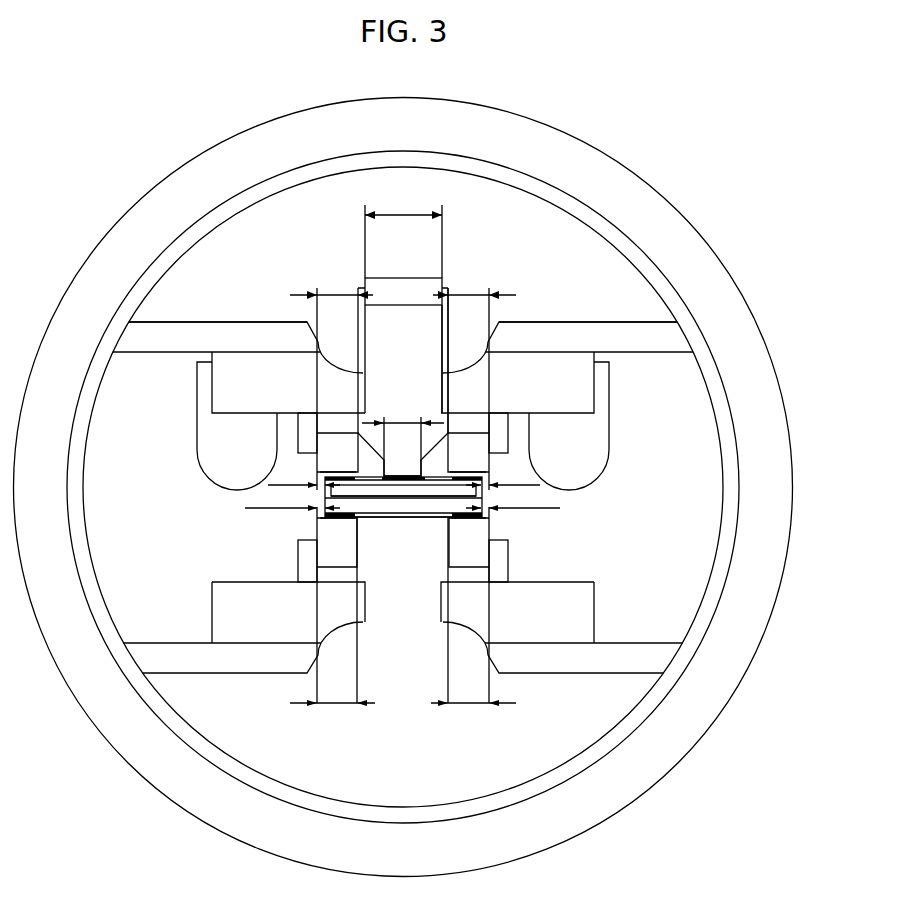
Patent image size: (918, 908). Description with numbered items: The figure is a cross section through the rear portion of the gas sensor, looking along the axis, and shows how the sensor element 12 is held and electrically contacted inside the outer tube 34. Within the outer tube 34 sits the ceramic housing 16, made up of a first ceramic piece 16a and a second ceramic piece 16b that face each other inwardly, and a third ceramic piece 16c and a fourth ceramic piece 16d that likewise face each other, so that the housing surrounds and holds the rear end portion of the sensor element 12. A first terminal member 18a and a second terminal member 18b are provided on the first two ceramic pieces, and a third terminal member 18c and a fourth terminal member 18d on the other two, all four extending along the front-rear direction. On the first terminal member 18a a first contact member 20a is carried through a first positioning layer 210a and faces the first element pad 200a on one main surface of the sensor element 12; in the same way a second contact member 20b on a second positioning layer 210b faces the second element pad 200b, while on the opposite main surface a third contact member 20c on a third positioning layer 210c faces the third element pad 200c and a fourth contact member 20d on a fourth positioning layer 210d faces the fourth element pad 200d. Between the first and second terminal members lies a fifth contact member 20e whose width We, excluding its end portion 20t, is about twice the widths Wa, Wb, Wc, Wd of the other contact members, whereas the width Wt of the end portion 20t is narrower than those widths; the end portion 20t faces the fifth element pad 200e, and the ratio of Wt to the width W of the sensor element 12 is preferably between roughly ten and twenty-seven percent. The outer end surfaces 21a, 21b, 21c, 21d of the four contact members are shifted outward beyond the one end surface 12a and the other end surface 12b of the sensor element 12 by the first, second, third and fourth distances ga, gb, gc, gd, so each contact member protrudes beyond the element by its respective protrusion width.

The outer tube 34 is at (528, 183).
The ceramic housing 16 is at (650, 320).
The first ceramic piece 16a is at (202, 338).
The second ceramic piece 16b is at (604, 338).
The third ceramic piece 16c is at (262, 660).
The fourth ceramic piece 16d is at (544, 660).
The first terminal member 18a is at (262, 372).
The second terminal member 18b is at (544, 372).
The third terminal member 18c is at (233, 627).
The fourth terminal member 18d is at (578, 612).
The first contact member 20a is at (335, 437).
The second contact member 20b is at (470, 437).
The third contact member 20c is at (338, 560).
The fourth contact member 20d is at (468, 560).
The fifth contact member 20e is at (397, 325).
The end portion 20t is at (401, 463).
The outer end surface 21a is at (320, 447).
The outer end surface 21b is at (486, 447).
The outer end surface 21c is at (317, 542).
The outer end surface 21d is at (489, 542).
The first positioning layer 210a is at (306, 440).
The second positioning layer 210b is at (500, 440).
The third positioning layer 210c is at (308, 568).
The fourth positioning layer 210d is at (498, 568).
The first element pad 200a is at (348, 471).
The second element pad 200b is at (458, 471).
The third element pad 200c is at (328, 521).
The fourth element pad 200d is at (478, 521).
The fifth element pad 200e is at (437, 508).
The sensor element 12 is at (411, 478).
The one end surface 12a is at (316, 499).
The other end surface 12b is at (490, 499).
The width of the fifth contact member We is at (403, 235).
The width of the first contact member Wa is at (331, 284).
The width of the second contact member Wb is at (474, 284).
The width of the third contact member Wc is at (332, 691).
The width of the fourth contact member Wd is at (473, 691).
The width of the end portion Wt is at (403, 429).
The width of the sensor element W is at (380, 500).
The first distance ga is at (304, 475).
The second distance gb is at (503, 475).
The third distance gc is at (292, 502).
The fourth distance gd is at (513, 502).